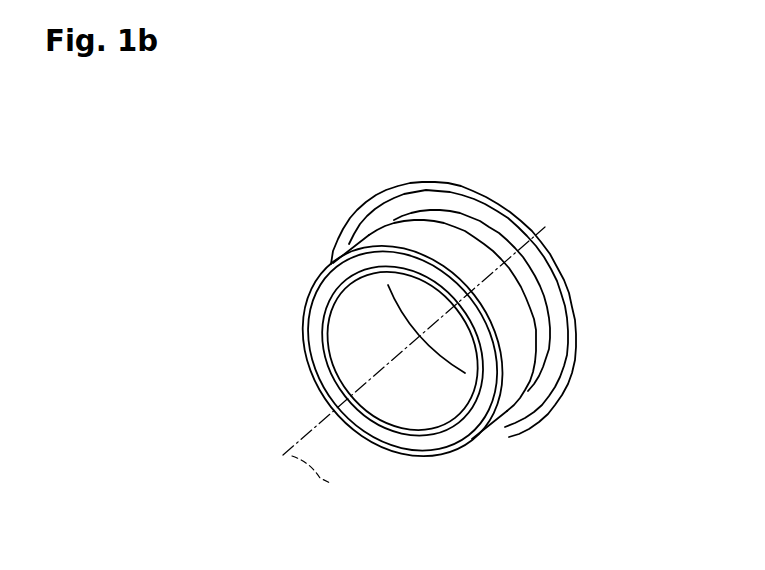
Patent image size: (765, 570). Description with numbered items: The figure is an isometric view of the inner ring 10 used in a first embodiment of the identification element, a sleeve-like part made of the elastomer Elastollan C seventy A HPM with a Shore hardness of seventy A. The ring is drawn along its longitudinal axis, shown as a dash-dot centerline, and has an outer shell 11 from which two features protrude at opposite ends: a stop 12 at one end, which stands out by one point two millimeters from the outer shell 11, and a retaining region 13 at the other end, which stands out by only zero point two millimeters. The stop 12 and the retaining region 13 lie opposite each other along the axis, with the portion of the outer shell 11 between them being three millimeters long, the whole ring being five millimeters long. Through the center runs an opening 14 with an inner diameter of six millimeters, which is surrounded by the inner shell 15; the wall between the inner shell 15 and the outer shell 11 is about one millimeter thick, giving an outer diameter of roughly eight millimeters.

The inner ring 10 is at (621, 224).
The outer shell 11 is at (520, 310).
The stop 12 is at (557, 357).
The retaining region 13 is at (487, 430).
The opening 14 is at (447, 362).
The inner shell 15 is at (352, 334).